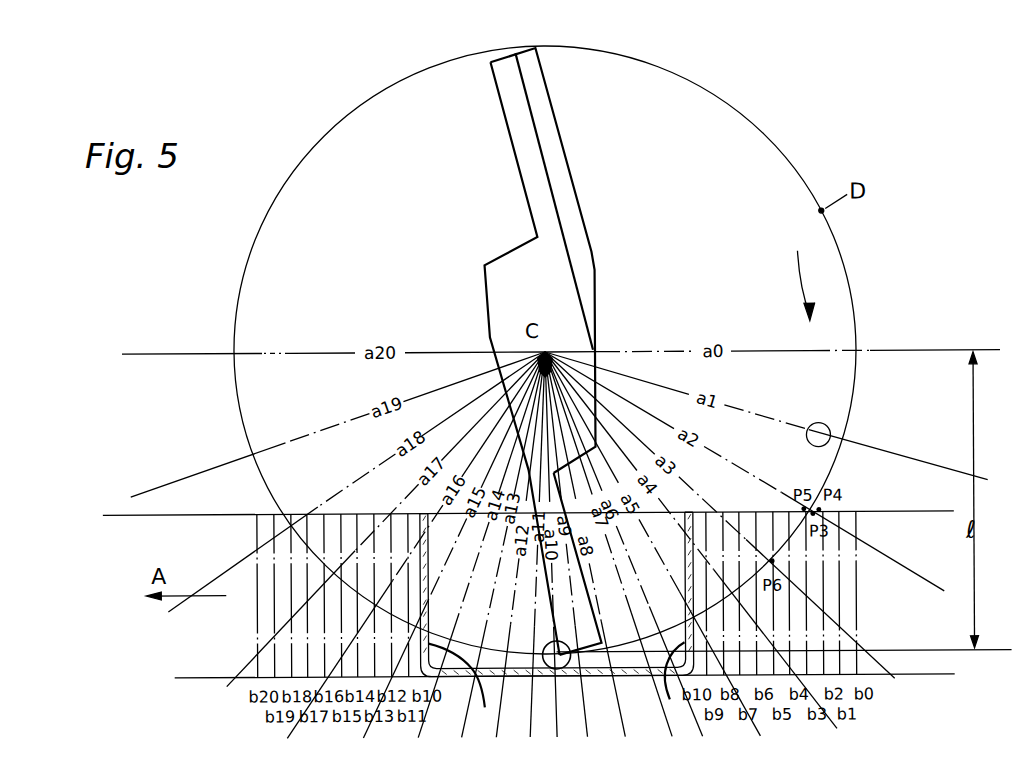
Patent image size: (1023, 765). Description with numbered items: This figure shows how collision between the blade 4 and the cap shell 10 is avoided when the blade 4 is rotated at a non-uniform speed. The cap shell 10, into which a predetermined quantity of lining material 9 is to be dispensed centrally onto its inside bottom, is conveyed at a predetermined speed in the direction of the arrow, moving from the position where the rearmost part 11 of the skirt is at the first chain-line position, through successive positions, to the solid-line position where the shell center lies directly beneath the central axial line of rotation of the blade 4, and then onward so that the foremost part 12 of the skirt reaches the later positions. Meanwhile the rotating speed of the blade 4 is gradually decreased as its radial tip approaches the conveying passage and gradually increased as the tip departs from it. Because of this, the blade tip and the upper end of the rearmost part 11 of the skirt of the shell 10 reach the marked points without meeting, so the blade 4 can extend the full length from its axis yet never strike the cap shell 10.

The blade 4 is at (570, 190).
The lining material 9 is at (553, 669).
The cap shell 10 is at (620, 677).
The rearmost part of the skirt 11 is at (673, 684).
The foremost part of the skirt 12 is at (463, 692).